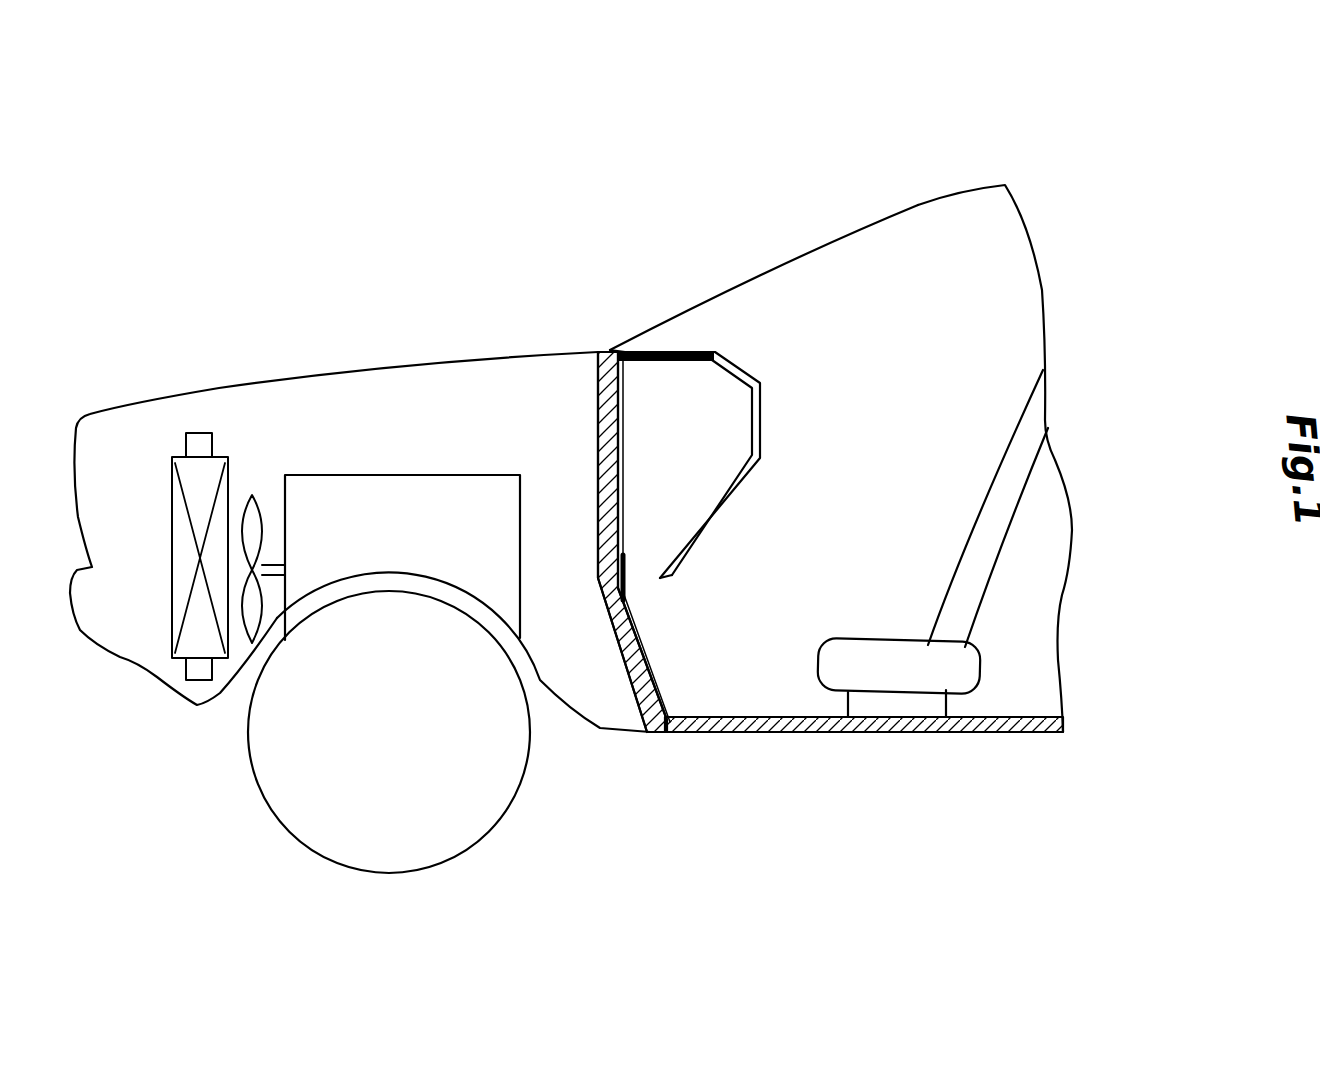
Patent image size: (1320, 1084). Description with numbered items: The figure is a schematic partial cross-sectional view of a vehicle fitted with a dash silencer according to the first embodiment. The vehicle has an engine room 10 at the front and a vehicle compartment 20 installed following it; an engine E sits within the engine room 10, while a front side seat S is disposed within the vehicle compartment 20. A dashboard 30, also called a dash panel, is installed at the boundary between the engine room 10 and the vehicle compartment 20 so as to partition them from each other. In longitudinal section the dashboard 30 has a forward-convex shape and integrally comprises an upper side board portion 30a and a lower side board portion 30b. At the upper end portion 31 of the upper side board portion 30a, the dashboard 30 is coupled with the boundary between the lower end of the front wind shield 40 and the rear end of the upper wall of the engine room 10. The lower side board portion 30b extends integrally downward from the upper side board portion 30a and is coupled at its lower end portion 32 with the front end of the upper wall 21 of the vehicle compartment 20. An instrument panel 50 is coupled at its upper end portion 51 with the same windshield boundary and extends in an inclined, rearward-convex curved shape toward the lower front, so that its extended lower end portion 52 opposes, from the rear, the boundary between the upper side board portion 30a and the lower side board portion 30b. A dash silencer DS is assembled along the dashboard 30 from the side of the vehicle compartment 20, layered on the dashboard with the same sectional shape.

The engine room 10 is at (290, 380).
The vehicle compartment 20 is at (913, 208).
The upper wall of the vehicle compartment 21 is at (780, 733).
The dashboard 30 is at (573, 577).
The upper side board portion 30a is at (598, 507).
The lower side board portion 30b is at (605, 615).
The upper end portion 31 is at (598, 355).
The lower end portion 32 is at (638, 720).
The front wind shield 40 is at (660, 320).
The instrument panel 50 is at (702, 459).
The upper end portion 51 is at (612, 350).
The lower end portion 52 is at (670, 579).
The engine E is at (410, 475).
The front side seat S is at (952, 508).
The dash silencer DS is at (647, 467).